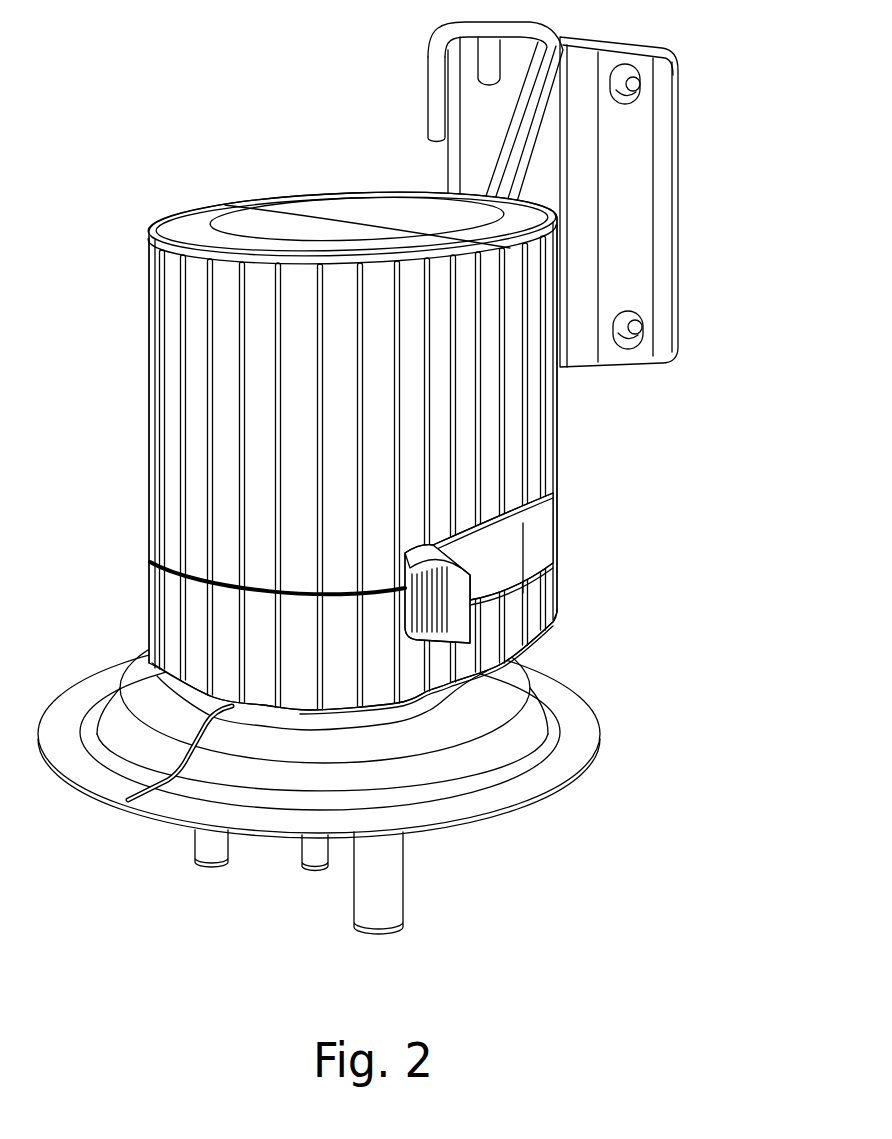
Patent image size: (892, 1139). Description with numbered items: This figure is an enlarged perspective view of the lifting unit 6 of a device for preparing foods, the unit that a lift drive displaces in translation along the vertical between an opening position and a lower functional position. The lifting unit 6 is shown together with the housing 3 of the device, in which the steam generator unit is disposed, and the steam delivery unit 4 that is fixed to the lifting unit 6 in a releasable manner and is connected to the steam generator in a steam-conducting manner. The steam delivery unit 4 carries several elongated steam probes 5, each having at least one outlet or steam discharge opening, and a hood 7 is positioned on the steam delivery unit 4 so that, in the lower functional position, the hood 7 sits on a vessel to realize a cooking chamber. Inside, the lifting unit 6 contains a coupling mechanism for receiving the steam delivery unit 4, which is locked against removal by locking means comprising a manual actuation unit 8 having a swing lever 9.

The housing 3 is at (533, 430).
The steam delivery unit 4 is at (374, 798).
The steam probes 5 is at (217, 842).
The lifting unit 6 is at (410, 568).
The hood 7 is at (577, 727).
The actuation unit 8 is at (510, 550).
The swing lever 9 is at (495, 577).